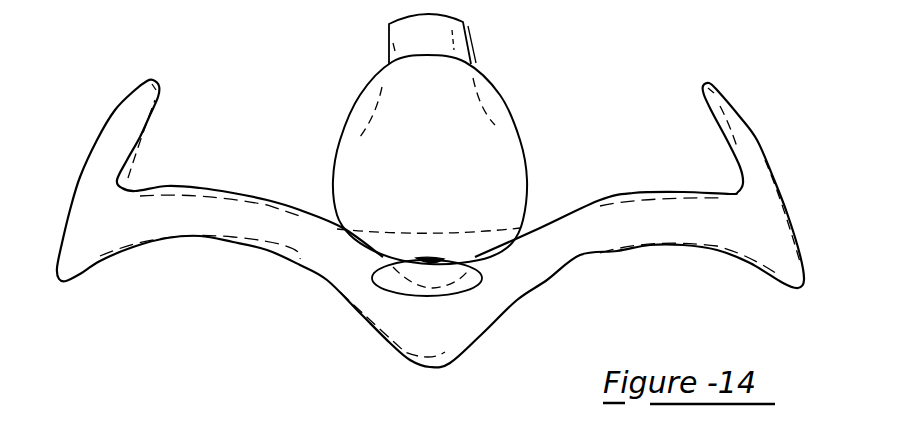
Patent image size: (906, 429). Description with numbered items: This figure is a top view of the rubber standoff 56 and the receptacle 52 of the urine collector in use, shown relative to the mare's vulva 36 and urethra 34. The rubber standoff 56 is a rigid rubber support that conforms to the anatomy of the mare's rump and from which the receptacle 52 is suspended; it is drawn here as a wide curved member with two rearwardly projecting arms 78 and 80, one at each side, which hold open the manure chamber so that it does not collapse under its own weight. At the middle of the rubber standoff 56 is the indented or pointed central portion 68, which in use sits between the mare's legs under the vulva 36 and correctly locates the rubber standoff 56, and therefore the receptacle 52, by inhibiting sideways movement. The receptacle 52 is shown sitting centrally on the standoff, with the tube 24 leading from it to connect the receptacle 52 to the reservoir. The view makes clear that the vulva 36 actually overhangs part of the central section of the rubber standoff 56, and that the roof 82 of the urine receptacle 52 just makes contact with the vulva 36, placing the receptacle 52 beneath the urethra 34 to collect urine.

The tube 24 is at (465, 35).
The urethra 34 is at (441, 266).
The vulva 36 is at (378, 281).
The receptacle 52 is at (372, 83).
The rubber standoff 56 is at (210, 243).
The central portion 68 is at (407, 365).
The rearwardly projecting arm 78 is at (137, 97).
The rearwardly projecting arm 80 is at (718, 100).
The roof 82 is at (443, 261).